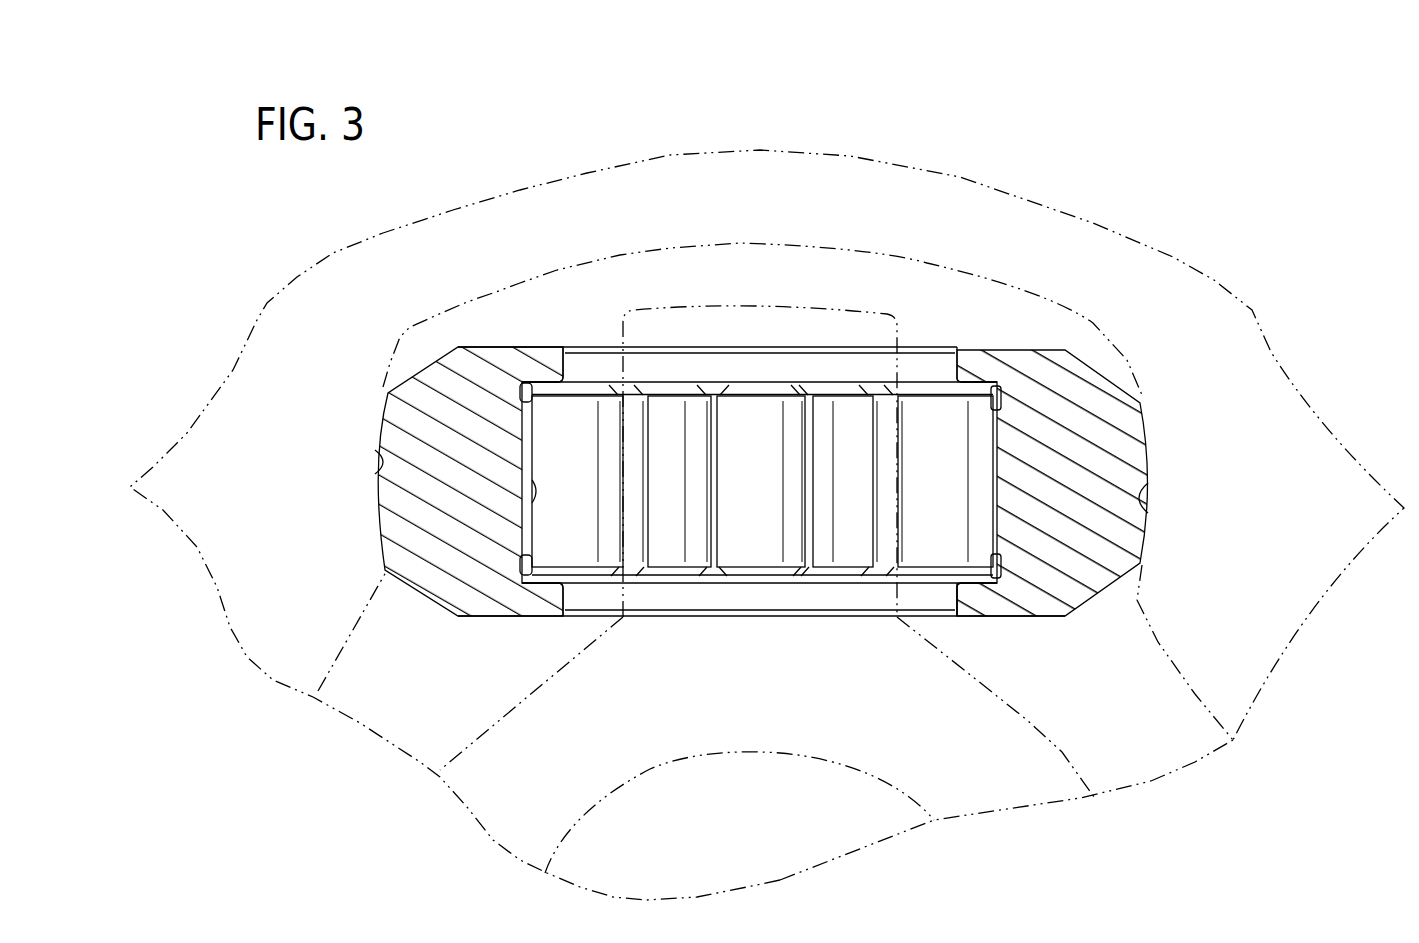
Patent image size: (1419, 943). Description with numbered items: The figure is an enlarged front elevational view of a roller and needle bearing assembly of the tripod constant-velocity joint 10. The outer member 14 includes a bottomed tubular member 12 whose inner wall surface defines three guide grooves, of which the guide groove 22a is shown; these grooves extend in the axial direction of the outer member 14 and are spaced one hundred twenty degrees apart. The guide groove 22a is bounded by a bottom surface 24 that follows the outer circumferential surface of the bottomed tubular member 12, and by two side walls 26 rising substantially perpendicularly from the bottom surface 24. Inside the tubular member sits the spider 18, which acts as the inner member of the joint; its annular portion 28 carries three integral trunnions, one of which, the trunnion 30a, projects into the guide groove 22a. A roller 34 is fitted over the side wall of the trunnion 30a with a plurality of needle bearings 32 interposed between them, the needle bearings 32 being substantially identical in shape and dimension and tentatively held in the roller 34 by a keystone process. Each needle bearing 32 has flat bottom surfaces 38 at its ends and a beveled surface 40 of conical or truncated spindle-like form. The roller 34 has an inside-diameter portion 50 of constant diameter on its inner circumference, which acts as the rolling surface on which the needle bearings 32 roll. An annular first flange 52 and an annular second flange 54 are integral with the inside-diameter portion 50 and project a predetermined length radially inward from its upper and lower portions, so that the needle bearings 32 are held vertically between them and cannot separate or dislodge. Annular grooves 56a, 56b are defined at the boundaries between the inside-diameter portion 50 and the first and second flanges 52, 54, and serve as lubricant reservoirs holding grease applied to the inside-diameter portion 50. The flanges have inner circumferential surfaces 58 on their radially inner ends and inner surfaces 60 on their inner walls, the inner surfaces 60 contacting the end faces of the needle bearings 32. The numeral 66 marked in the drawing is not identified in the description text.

The tripod constant-velocity joint 10 is at (907, 398).
The bottomed tubular member 12 is at (767, 525).
The outer member 14 is at (1173, 259).
The spider 18 is at (1079, 749).
The guide groove 22a is at (775, 447).
The bottom surface 24 is at (683, 258).
The side walls 26 is at (376, 452).
The annular portion 28 is at (545, 755).
The trunnion 30a is at (833, 310).
The needle bearings 32 is at (950, 453).
The roller 34 is at (761, 467).
The bottom surfaces 38 is at (957, 594).
The beveled surface 40 is at (990, 384).
The inside-diameter portion 50 is at (364, 481).
The first flange 52 is at (1042, 497).
The second flange 54 is at (975, 598).
The annular groove 56a is at (528, 383).
The annular groove 56b is at (524, 575).
The inner circumferential surface 58 is at (902, 590).
The inner surface 60 is at (578, 383).
The cage 66 is at (748, 385).